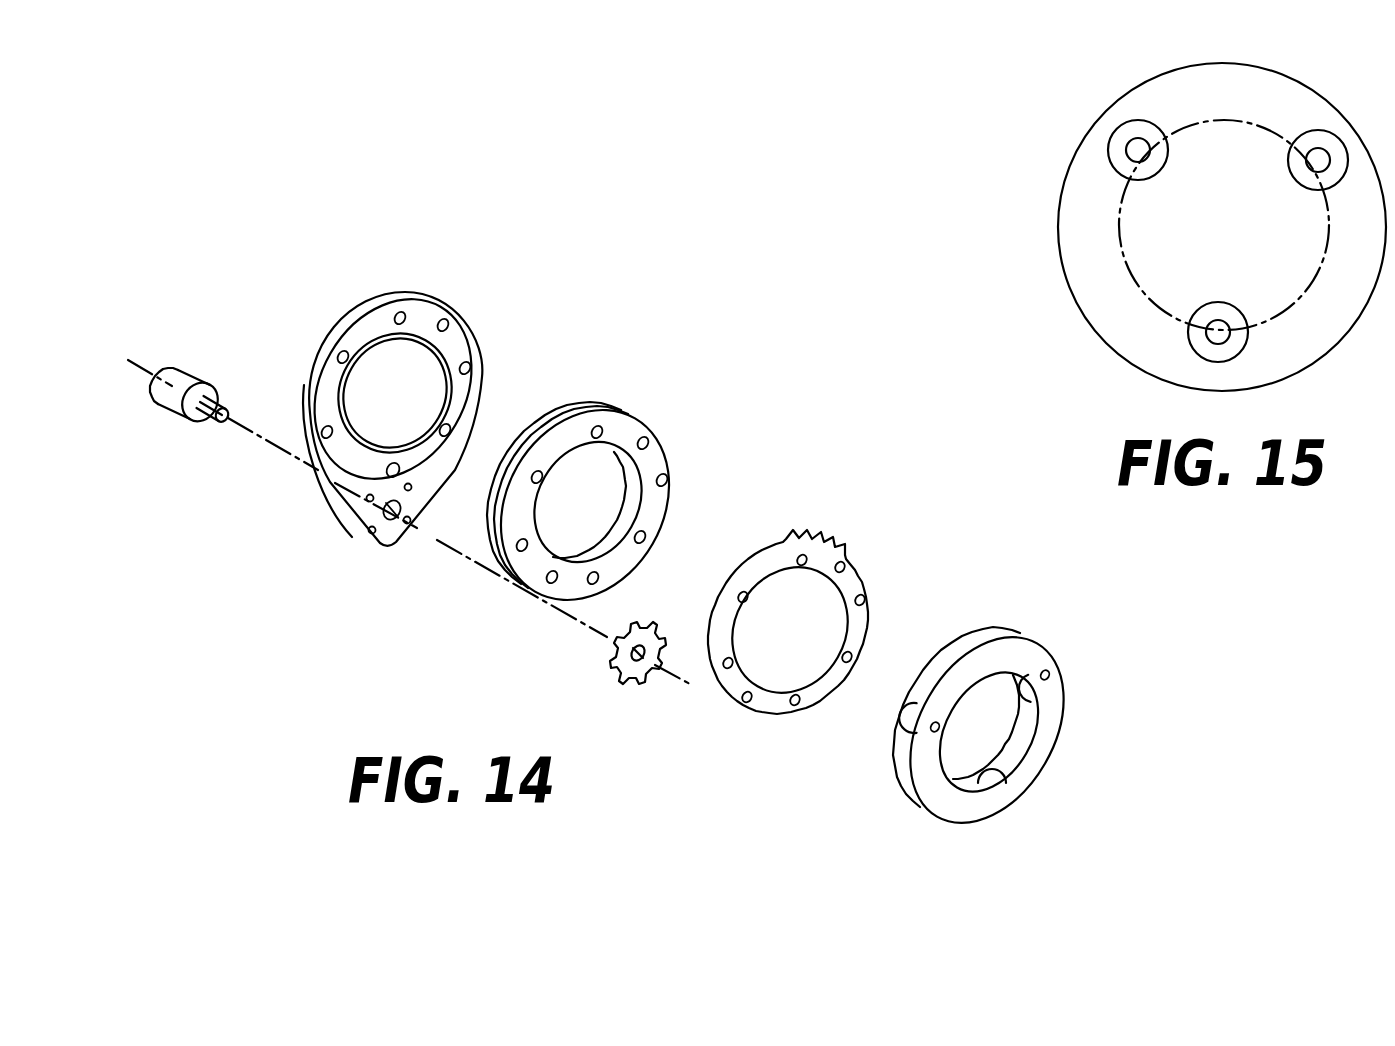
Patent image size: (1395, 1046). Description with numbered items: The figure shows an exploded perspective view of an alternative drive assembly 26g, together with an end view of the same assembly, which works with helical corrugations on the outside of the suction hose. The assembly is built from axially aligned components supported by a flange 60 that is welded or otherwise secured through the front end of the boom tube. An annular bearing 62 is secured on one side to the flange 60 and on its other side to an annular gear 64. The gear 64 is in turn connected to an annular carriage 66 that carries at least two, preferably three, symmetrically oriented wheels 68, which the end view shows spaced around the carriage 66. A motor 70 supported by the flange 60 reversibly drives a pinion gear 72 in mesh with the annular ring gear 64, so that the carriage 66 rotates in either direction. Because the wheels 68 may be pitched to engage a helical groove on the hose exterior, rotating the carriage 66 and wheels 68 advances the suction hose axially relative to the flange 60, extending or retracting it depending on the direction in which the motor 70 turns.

In FIG. 14, the drive assembly 26g is at (737, 494).
In FIG. 14, the flange 60 is at (427, 295).
In FIG. 14, the annular bearing 62 is at (623, 423).
In FIG. 14, the annular gear 64 is at (857, 580).
In FIG. 14, the annular carriage 66 is at (1043, 655).
In FIG. 15, the annular carriage 66 is at (1273, 75).
In FIG. 14, the wheels 68 is at (1023, 692).
In FIG. 15, the wheels 68 is at (1166, 166).
In FIG. 14, the motor 70 is at (200, 381).
In FIG. 14, the pinion gear 72 is at (636, 685).